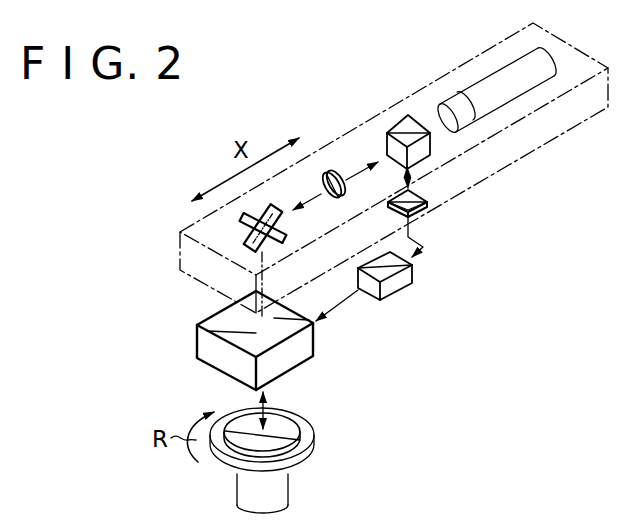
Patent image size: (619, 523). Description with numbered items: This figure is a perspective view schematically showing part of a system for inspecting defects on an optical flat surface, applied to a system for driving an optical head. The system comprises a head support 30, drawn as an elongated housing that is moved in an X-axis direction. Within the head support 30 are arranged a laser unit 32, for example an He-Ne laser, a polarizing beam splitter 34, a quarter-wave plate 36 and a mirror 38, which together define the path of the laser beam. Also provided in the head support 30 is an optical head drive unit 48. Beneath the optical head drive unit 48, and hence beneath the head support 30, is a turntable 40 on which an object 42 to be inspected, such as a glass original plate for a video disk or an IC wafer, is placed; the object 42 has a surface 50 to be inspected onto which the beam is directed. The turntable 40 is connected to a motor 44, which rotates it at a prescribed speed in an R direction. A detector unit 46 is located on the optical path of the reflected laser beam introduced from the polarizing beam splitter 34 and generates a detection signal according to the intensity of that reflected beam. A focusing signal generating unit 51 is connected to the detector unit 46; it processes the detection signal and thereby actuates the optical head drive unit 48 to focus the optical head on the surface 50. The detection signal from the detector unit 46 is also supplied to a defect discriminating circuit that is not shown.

The head support 30 is at (367, 118).
The laser unit 32 is at (505, 72).
The polarizing beam splitter 34 is at (405, 114).
The quarter-wave plate 36 is at (333, 170).
The mirror 38 is at (246, 237).
The detector unit 46 is at (427, 198).
The focusing signal generating unit 51 is at (398, 288).
The optical head drive unit 48 is at (216, 320).
The surface to be inspected 50 is at (280, 424).
The turntable 40 is at (313, 438).
The object to be inspected 42 is at (231, 454).
The motor 44 is at (292, 486).